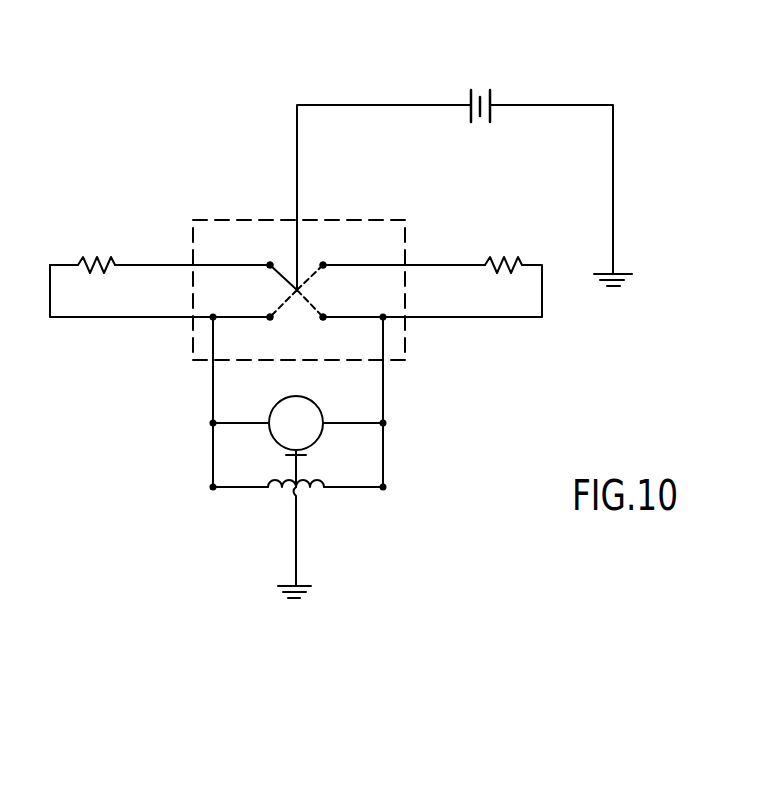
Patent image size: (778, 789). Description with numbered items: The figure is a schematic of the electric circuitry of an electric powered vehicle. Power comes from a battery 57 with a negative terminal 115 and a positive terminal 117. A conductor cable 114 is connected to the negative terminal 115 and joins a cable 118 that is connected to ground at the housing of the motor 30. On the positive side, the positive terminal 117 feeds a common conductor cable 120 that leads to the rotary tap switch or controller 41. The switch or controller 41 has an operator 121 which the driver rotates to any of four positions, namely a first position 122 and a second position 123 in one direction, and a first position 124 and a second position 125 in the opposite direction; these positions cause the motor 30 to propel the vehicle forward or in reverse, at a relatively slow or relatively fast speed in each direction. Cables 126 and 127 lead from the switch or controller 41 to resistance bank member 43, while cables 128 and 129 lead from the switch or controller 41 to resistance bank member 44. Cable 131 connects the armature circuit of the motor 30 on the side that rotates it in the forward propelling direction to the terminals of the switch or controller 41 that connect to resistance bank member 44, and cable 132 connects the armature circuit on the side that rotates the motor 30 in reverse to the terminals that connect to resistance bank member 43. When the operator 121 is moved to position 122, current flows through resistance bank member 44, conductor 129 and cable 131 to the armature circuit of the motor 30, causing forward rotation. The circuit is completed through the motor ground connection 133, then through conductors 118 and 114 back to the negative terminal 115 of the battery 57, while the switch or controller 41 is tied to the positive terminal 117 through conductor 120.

The motor 30 is at (305, 448).
The rotary tap switch 41 is at (340, 218).
The resistance bank member 43 is at (497, 263).
The resistance bank member 44 is at (88, 260).
The battery 57 is at (480, 92).
The conductor cable 114 is at (580, 105).
The negative terminal 115 is at (490, 105).
The positive terminal 117 is at (468, 105).
The cable 118 is at (613, 160).
The common conductor cable 120 is at (297, 160).
The operator 121 is at (288, 275).
The first position 122 is at (268, 264).
The second position 123 is at (272, 319).
The first position 124 is at (325, 264).
The second position 125 is at (322, 319).
The cable 126 is at (455, 265).
The cable 127 is at (447, 320).
The cable 128 is at (143, 262).
The cable 129 is at (118, 318).
The cable 131 is at (213, 378).
The cable 132 is at (383, 398).
The motor ground connection 133 is at (295, 567).